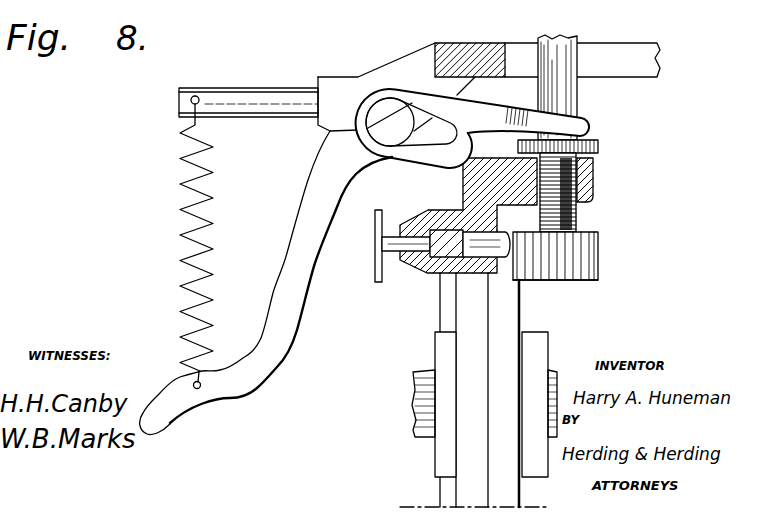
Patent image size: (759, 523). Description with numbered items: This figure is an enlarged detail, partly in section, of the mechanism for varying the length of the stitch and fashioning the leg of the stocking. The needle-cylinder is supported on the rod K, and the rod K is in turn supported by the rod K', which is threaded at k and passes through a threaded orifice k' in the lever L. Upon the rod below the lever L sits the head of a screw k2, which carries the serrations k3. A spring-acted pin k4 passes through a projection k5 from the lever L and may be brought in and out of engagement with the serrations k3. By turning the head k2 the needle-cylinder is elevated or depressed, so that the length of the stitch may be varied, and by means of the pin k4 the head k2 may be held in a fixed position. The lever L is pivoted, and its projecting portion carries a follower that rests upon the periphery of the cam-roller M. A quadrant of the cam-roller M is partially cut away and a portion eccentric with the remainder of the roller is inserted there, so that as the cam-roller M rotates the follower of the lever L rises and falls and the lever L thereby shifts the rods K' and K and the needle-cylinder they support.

The rod K is at (578, 87).
The threaded portion k is at (570, 156).
The threaded orifice k' is at (600, 180).
The rod K' is at (587, 192).
The screw head k2 is at (595, 255).
The serrations k3 is at (586, 279).
The spring-acted pin k4 is at (500, 262).
The projection k5 is at (422, 212).
The lever L is at (478, 180).
The cam-roller M is at (478, 390).